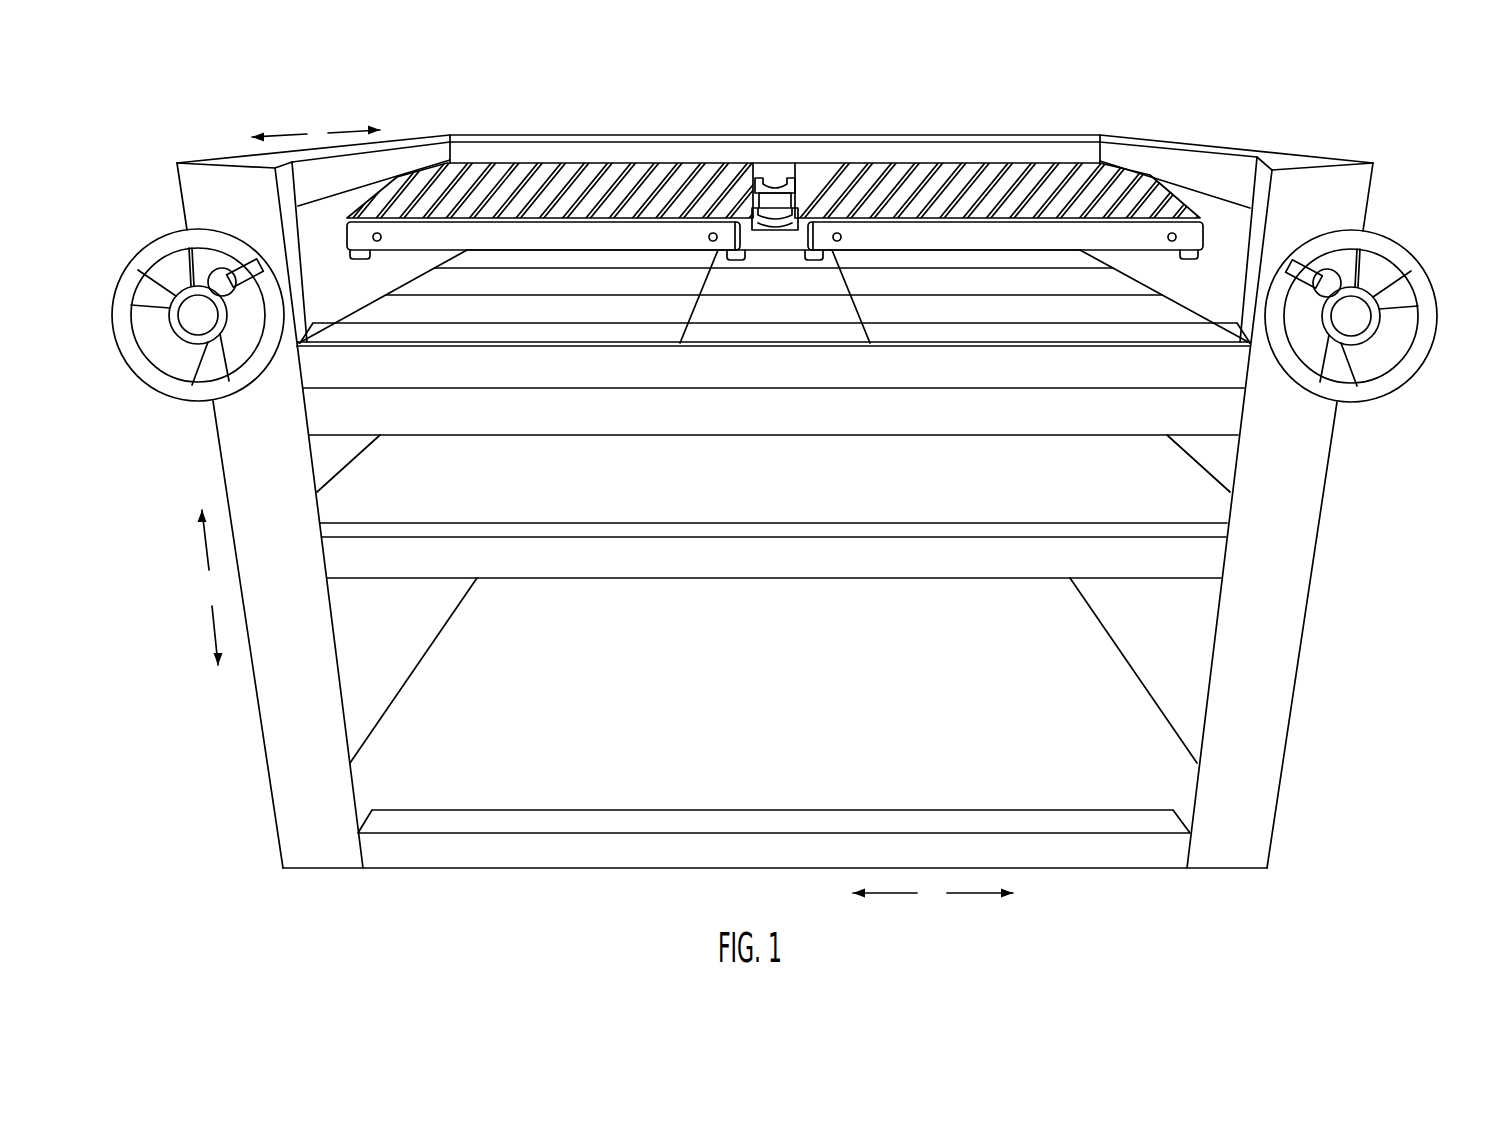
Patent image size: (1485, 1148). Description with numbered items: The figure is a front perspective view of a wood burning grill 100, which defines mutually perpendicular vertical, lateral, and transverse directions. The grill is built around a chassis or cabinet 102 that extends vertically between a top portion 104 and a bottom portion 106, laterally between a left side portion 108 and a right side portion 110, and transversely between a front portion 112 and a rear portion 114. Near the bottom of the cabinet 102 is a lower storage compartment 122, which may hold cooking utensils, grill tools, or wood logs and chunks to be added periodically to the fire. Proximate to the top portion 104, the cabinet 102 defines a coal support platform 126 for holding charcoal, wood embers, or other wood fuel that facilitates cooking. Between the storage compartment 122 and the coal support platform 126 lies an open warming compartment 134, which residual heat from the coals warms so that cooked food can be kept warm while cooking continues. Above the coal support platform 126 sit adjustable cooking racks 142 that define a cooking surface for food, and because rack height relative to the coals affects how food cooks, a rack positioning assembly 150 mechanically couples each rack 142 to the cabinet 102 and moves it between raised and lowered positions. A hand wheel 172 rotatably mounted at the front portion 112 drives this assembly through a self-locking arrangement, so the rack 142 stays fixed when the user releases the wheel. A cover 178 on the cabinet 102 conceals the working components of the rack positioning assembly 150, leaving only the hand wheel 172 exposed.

The wood burning grill 100 is at (783, 496).
The cabinet 102 is at (278, 822).
The top portion 104 is at (1188, 140).
The bottom portion 106 is at (1128, 878).
The left side portion 108 is at (261, 515).
The right side portion 110 is at (1283, 515).
The front portion 112 is at (1230, 850).
The rear portion 114 is at (826, 133).
The storage compartment 122 is at (775, 875).
The coal support platform 126 is at (452, 320).
The warming compartment 134 is at (567, 512).
The rack 142 is at (513, 193).
The rack positioning assembly 150 is at (1376, 410).
The hand wheel 172 is at (148, 368).
The cover 178 is at (1258, 157).